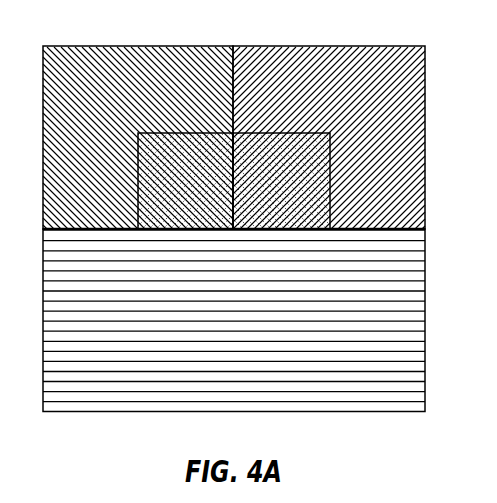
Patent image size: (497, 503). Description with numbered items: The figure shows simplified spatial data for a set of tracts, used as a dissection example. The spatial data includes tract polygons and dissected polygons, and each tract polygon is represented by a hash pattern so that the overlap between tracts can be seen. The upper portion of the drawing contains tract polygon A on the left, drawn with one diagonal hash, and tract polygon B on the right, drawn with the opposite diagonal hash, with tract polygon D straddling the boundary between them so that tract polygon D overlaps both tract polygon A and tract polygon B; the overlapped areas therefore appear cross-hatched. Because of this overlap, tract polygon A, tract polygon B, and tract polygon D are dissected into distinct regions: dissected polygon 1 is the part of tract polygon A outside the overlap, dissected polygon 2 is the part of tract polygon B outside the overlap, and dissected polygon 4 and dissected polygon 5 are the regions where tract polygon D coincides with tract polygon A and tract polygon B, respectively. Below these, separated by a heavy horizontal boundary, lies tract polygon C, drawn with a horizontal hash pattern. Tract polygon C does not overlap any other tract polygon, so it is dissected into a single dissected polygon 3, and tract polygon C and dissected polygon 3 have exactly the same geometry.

The dissected polygon 1 is at (138, 137).
The dissected polygon 2 is at (329, 137).
The dissected polygon 3 is at (234, 320).
The dissected polygon 4 is at (185, 181).
The dissected polygon 5 is at (281, 181).
The tract polygon A is at (138, 137).
The tract polygon B is at (329, 137).
The tract polygon C is at (234, 320).
The tract polygon D is at (234, 181).